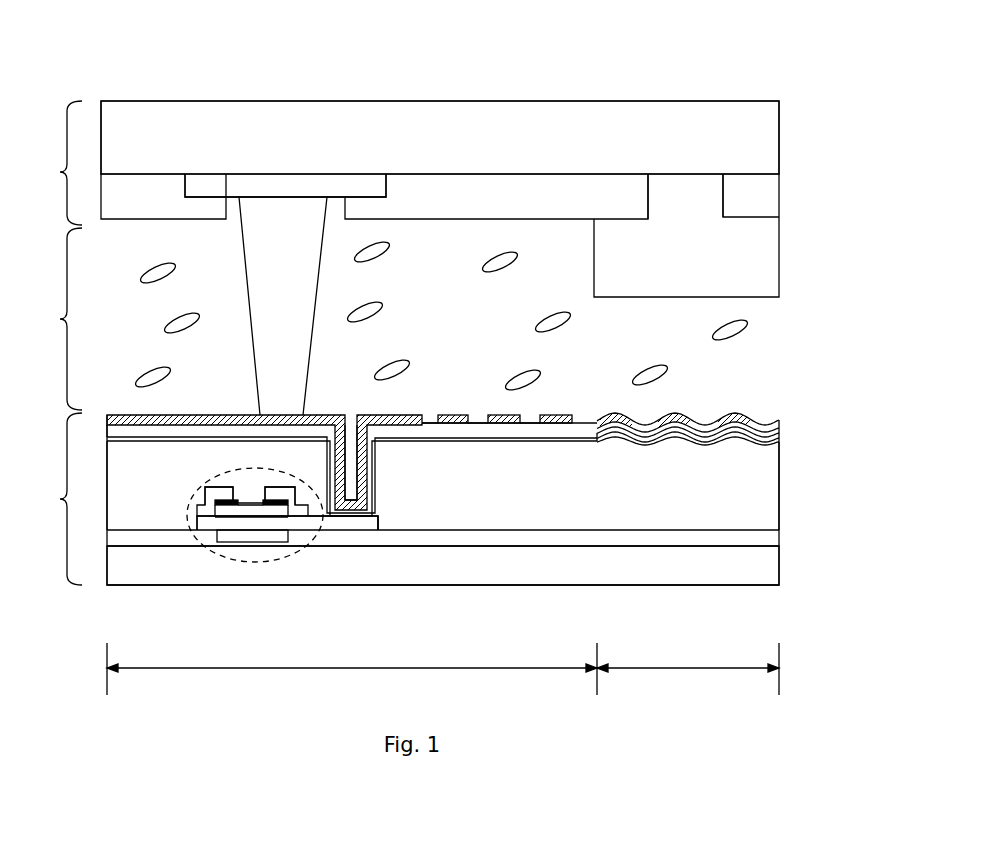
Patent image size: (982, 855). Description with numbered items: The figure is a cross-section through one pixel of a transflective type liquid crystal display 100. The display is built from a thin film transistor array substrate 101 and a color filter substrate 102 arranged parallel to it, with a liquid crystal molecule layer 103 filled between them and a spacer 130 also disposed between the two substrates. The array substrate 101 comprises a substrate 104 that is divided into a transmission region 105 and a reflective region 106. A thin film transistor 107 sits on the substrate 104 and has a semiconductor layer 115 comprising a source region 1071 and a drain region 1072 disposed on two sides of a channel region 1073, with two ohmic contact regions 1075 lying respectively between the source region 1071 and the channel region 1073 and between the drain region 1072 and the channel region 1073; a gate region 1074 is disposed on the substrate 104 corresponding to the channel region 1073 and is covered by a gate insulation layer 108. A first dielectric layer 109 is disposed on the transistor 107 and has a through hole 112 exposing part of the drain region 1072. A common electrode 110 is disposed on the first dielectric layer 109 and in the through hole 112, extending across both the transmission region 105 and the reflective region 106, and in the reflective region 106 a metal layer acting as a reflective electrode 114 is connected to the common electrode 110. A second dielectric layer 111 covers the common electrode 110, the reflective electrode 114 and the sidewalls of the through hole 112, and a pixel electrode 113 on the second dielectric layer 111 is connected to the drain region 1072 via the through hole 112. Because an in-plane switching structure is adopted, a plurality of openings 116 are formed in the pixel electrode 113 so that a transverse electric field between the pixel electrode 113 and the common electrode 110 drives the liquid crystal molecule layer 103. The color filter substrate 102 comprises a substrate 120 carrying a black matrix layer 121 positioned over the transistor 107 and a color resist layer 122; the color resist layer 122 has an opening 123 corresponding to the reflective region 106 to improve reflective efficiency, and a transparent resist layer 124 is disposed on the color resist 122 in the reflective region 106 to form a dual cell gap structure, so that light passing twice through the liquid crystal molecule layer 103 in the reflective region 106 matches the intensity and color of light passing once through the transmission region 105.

The transflective type liquid crystal display 100 is at (52, 33).
The thin film transistor array substrate 101 is at (397, 499).
The color filter substrate 102 is at (397, 163).
The liquid crystal molecule layer 103 is at (48, 319).
The substrate 104 is at (775, 567).
The transmission region 105 is at (352, 669).
The reflective region 106 is at (688, 669).
The thin film transistor 107 is at (184, 514).
The gate insulation layer 108 is at (775, 537).
The first dielectric layer 109 is at (775, 492).
The common electrode 110 is at (115, 445).
The second dielectric layer 111 is at (157, 434).
The through hole 112 is at (347, 414).
The pixel electrode 113 is at (232, 416).
The reflective electrode 114 is at (778, 420).
The semiconductor layer 115 is at (275, 503).
The openings 116 is at (472, 415).
The substrate 120 is at (753, 140).
The black matrix layer 121 is at (297, 187).
The color resist layer 122 is at (157, 207).
The opening 123 is at (703, 203).
The transparent resist layer 124 is at (780, 287).
The spacer 130 is at (307, 248).
The source region 1071 is at (222, 500).
The drain region 1072 is at (277, 500).
The channel region 1073 is at (247, 503).
The gate region 1074 is at (257, 543).
The ohmic contact regions 1075 is at (222, 546).